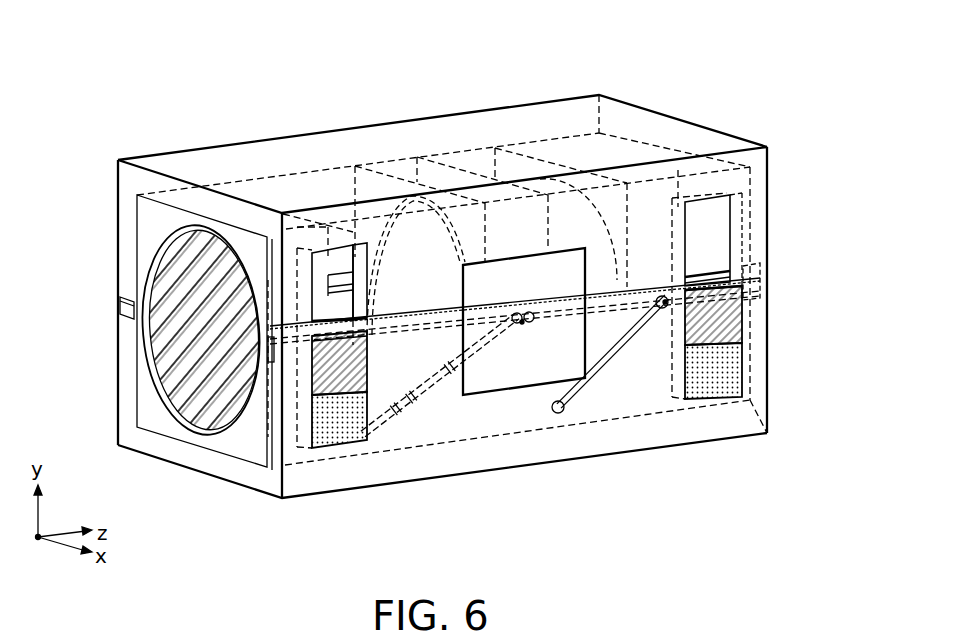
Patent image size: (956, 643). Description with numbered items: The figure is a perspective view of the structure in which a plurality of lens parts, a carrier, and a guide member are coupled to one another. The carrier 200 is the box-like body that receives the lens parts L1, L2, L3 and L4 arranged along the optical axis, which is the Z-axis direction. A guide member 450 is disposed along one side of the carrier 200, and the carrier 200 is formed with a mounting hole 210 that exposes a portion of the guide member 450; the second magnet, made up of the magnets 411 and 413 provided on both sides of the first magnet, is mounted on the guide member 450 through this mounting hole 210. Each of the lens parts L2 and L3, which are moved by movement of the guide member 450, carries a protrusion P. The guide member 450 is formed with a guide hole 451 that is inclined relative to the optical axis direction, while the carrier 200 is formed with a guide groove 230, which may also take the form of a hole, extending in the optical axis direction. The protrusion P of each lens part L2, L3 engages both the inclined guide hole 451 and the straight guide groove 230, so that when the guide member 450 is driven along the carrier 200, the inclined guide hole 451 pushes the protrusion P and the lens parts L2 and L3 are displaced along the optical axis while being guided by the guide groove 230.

The carrier 200 is at (197, 158).
The mounting hole 210 is at (716, 229).
The guide groove 230 is at (608, 312).
The magnet 411 is at (340, 427).
The magnet 413 is at (705, 380).
The guide member 450 is at (485, 425).
The guide hole 451 is at (460, 378).
The protrusion P is at (522, 322).
The lens part L1 is at (222, 228).
The lens part L2 is at (393, 170).
The lens part L3 is at (528, 150).
The lens part L4 is at (620, 140).